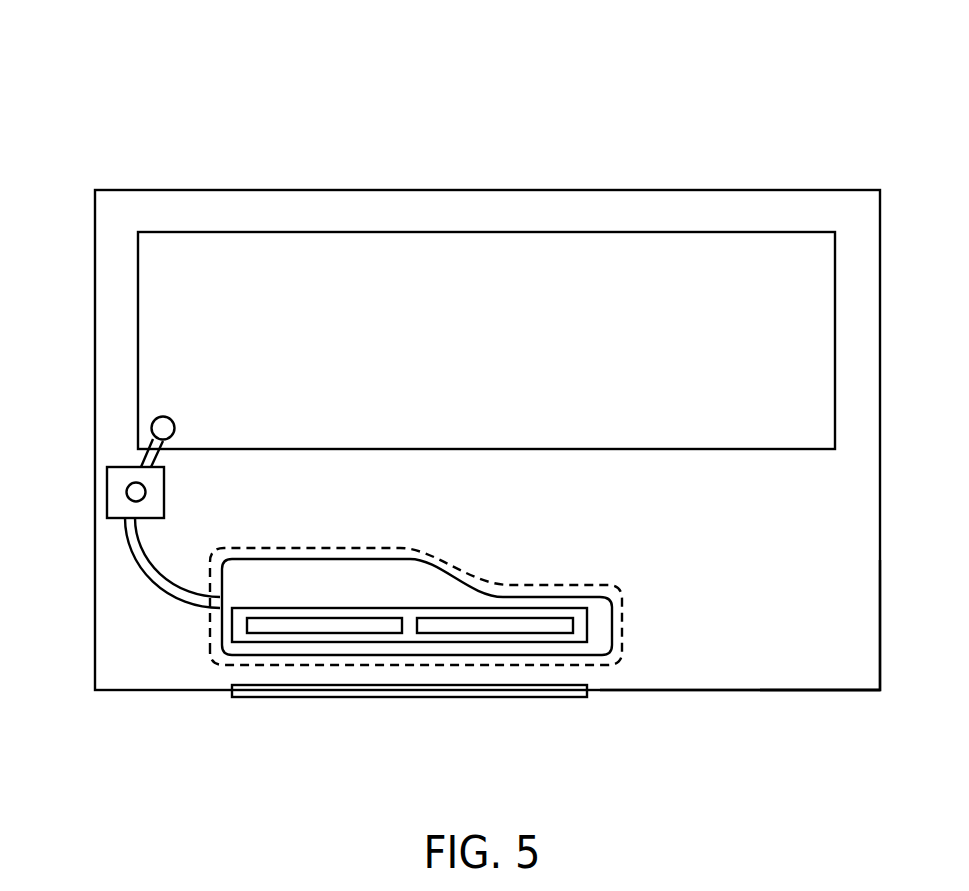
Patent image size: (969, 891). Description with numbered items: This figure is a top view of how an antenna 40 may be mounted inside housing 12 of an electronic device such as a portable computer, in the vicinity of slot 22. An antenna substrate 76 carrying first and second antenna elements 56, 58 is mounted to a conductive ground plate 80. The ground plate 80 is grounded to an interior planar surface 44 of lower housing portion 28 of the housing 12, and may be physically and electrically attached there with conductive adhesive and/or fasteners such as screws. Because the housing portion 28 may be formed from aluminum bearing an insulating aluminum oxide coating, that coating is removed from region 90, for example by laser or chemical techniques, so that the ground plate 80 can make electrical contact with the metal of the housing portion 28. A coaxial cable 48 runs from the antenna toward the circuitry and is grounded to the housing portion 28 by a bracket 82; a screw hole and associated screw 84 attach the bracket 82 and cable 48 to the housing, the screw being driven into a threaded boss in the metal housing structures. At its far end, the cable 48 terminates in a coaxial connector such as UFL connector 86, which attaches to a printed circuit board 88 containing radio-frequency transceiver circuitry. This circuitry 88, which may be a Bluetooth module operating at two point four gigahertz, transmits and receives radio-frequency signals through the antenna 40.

The housing 12 is at (750, 88).
The slot 22 is at (382, 690).
The lower housing portion 28 is at (812, 690).
The antenna 40 is at (565, 559).
The interior planar surface 44 is at (718, 673).
The cable 48 is at (152, 573).
The first antenna element 56 is at (308, 622).
The second antenna element 58 is at (502, 625).
The antenna substrate 76 is at (587, 622).
The ground plate 80 is at (450, 573).
The bracket 82 is at (164, 488).
The screw 84 is at (126, 491).
The UFL connector 86 is at (151, 428).
The printed circuit board with radio-frequency transceiver circuitry 88 is at (138, 331).
The region 90 is at (210, 632).